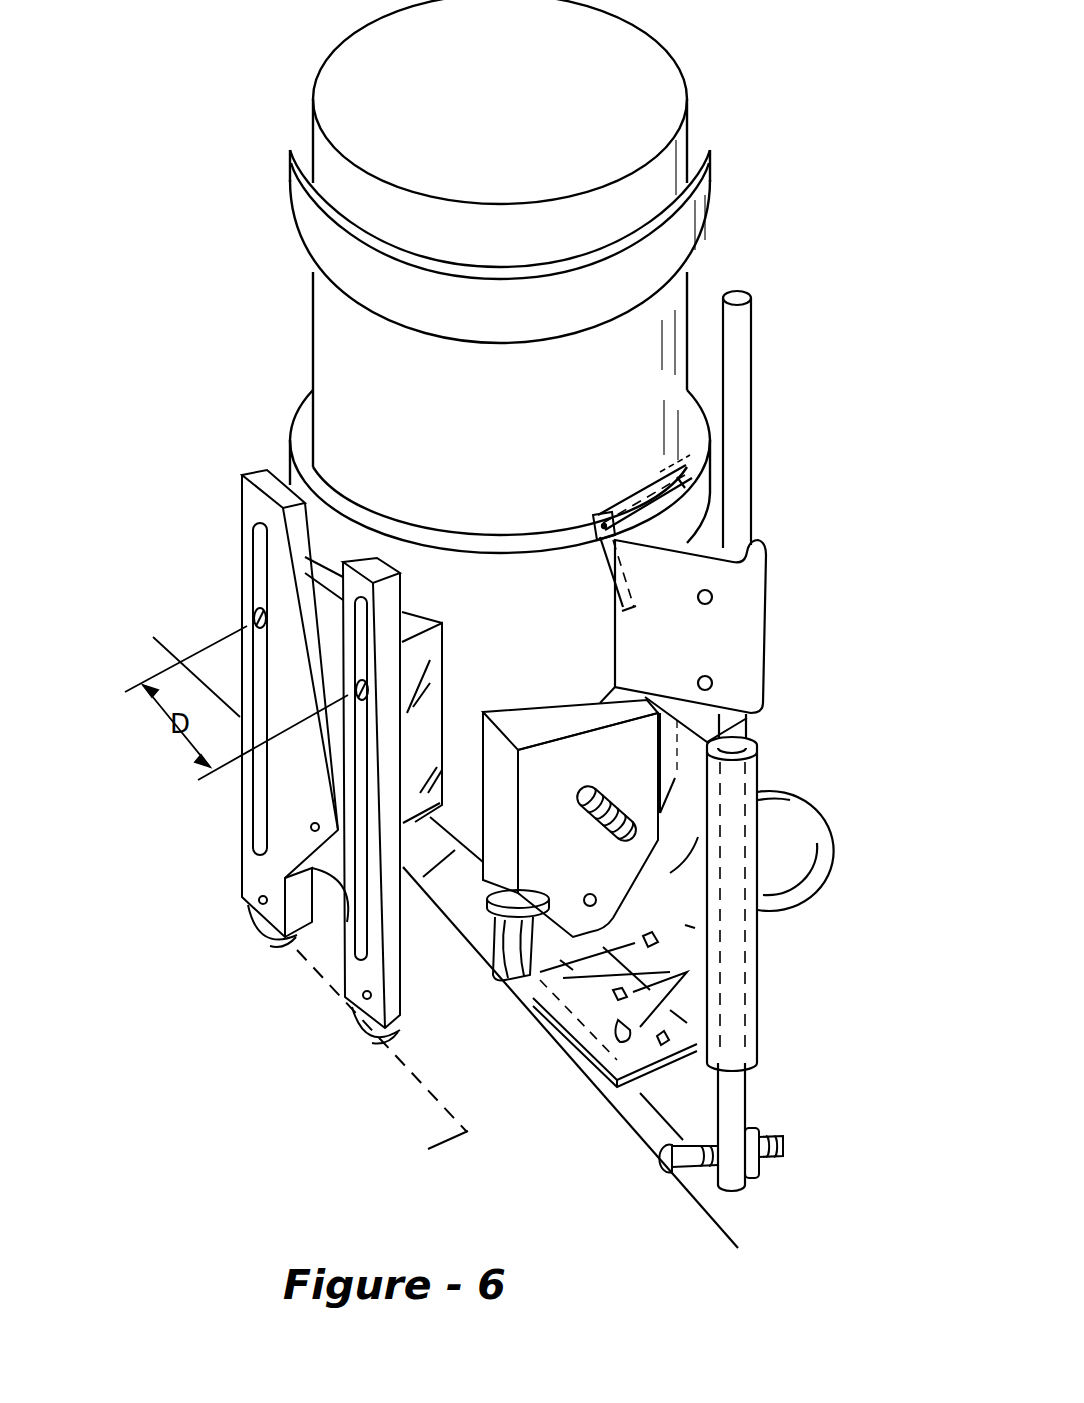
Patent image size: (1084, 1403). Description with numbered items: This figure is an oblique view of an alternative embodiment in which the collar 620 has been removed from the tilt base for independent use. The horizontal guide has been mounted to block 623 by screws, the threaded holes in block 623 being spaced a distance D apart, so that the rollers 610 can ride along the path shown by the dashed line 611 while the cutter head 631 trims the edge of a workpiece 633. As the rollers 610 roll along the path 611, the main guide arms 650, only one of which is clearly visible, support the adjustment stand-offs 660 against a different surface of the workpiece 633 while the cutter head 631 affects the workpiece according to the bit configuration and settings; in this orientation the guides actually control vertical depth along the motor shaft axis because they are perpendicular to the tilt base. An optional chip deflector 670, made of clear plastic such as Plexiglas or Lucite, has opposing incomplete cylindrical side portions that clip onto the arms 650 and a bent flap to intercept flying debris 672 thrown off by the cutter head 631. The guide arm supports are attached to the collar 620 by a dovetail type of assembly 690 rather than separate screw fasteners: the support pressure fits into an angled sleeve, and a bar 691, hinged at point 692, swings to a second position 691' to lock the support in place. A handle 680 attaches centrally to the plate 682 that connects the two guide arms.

The rollers 610 is at (272, 940).
The dashed line 611 is at (382, 1069).
The collar 620 is at (575, 894).
The block 623 is at (413, 623).
The cutter head 631 is at (512, 982).
The workpiece 633 is at (628, 1234).
The main guide arms 650 is at (737, 1110).
The adjustment stand-offs 660 is at (668, 1163).
The chip deflector 670 is at (752, 1050).
The flying debris 672 is at (667, 1037).
The handle 680 is at (807, 813).
The plate 682 is at (697, 1113).
The dovetail type of assembly 690 is at (642, 498).
The bar 691 is at (569, 574).
The second position of bar 691' is at (609, 443).
The hinge point 692 is at (590, 518).